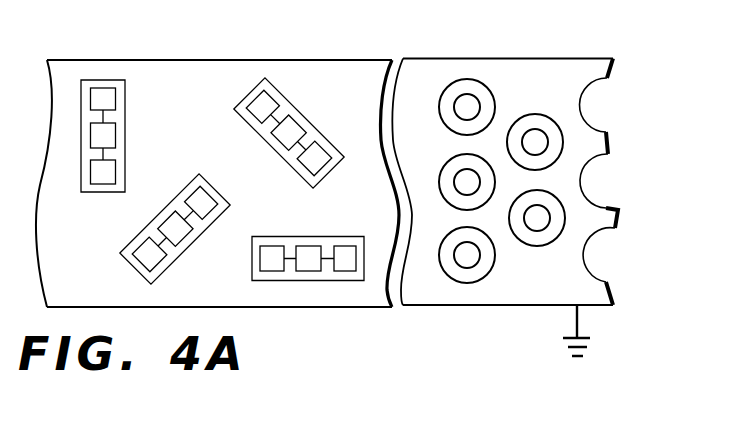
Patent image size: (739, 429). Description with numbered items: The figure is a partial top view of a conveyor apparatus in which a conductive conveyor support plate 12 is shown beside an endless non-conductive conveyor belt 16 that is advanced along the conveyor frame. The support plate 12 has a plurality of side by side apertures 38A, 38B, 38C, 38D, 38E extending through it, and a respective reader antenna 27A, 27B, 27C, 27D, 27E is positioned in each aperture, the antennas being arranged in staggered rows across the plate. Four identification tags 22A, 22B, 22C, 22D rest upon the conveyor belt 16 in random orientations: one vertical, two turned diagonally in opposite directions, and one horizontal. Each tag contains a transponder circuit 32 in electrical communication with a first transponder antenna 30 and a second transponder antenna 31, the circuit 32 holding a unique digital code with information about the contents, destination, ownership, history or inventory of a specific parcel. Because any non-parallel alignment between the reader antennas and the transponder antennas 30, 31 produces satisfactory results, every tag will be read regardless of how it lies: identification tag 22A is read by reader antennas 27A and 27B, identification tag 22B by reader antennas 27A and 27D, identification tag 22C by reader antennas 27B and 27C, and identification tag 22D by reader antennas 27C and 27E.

The conveyor support plate 12 is at (582, 72).
The conveyor belt 16 is at (212, 70).
The identification tag 22A is at (100, 80).
The identification tag 22B is at (275, 150).
The identification tag 22C is at (143, 231).
The identification tag 22D is at (312, 237).
The first transponder antenna 30 is at (90, 100).
The second transponder antenna 31 is at (90, 178).
The transponder circuit 32 is at (90, 135).
The reader antenna 27A is at (470, 100).
The reader antenna 27B is at (463, 183).
The reader antenna 27C is at (470, 260).
The reader antenna 27D is at (542, 138).
The reader antenna 27E is at (541, 222).
The aperture 38A is at (457, 87).
The aperture 38B is at (452, 160).
The aperture 38C is at (450, 273).
The aperture 38D is at (530, 116).
The aperture 38E is at (531, 245).